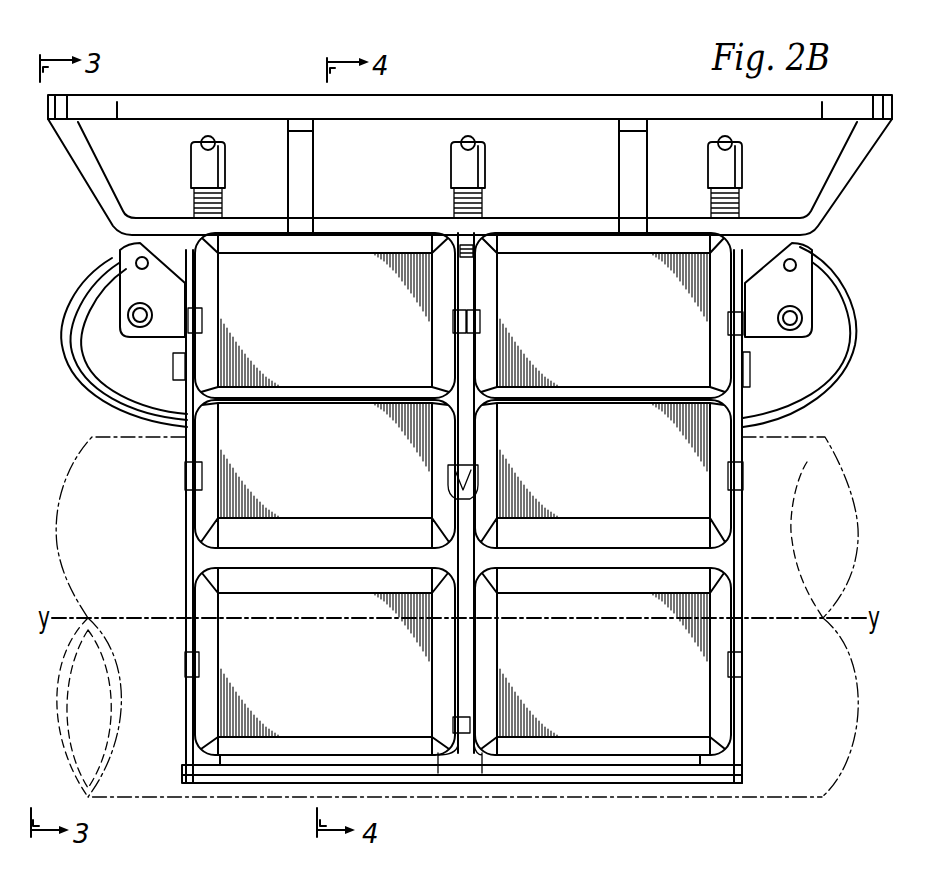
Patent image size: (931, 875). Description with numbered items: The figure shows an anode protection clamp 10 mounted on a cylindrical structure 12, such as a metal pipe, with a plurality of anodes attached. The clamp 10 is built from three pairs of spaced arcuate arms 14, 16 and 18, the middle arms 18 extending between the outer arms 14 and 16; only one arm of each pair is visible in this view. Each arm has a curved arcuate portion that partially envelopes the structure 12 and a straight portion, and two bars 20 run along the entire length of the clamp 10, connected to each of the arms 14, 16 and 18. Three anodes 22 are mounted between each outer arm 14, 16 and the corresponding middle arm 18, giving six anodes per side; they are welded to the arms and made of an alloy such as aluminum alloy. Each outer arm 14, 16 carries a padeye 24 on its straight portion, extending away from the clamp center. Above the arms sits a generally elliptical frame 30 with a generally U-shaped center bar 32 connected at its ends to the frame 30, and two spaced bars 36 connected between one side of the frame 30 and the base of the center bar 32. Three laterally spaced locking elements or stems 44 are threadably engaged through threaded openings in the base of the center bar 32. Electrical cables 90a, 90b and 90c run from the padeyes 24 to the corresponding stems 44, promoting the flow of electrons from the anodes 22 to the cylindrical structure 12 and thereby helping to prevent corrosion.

The anode protection clamp 10 is at (582, 50).
The cylindrical structure 12 is at (550, 799).
The arcuate arm 14 is at (741, 757).
The arcuate arm 16 is at (183, 560).
The arcuate arm 18 is at (479, 763).
The bar 20 is at (645, 784).
The anode 22 is at (336, 335).
The padeye 24 is at (120, 246).
The frame 30 is at (255, 91).
The center bar 32 is at (83, 187).
The spaced bar 36 is at (315, 178).
The locking element or stem 44 is at (185, 174).
The electrical cable 90a is at (139, 398).
The electrical cable 90b is at (92, 399).
The electrical cable 90c is at (828, 387).